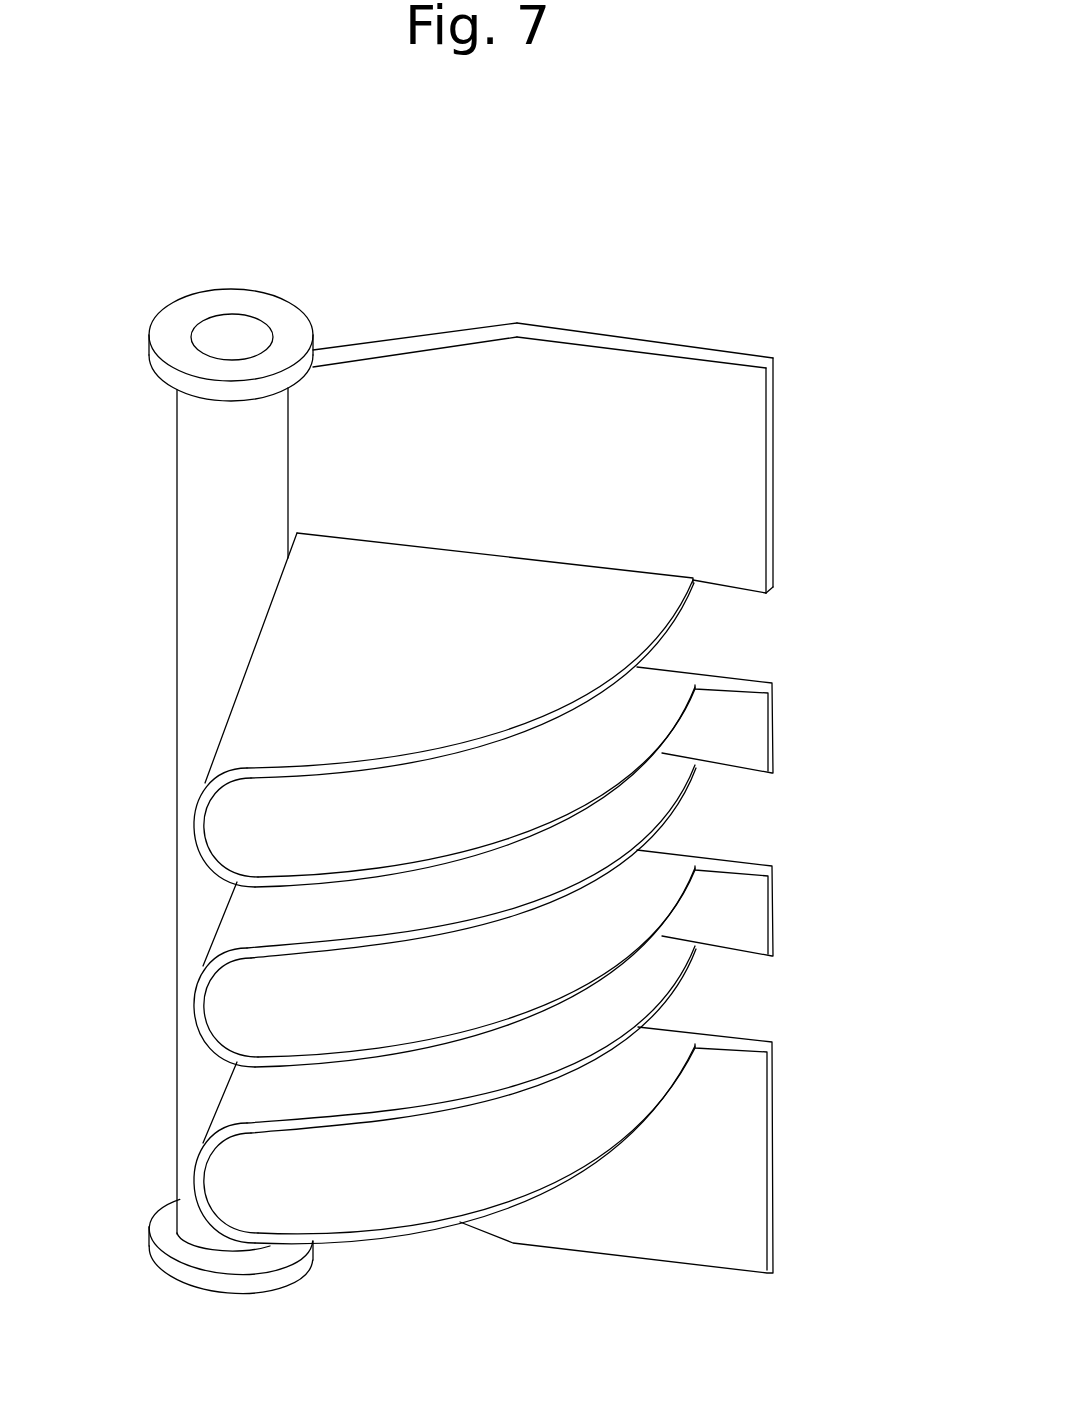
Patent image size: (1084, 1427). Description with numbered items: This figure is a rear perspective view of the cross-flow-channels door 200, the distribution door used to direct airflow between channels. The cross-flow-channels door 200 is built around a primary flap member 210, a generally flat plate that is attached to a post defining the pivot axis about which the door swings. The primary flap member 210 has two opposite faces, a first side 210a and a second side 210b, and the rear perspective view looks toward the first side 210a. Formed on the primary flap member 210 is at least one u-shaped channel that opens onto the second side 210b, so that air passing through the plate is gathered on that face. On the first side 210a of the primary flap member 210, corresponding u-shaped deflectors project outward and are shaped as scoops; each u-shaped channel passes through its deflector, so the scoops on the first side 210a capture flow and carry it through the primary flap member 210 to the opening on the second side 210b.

The cross-flow-channels door 200 is at (752, 258).
The primary flap member 210 is at (748, 452).
The first side 210a is at (426, 374).
The second side 210b is at (590, 333).